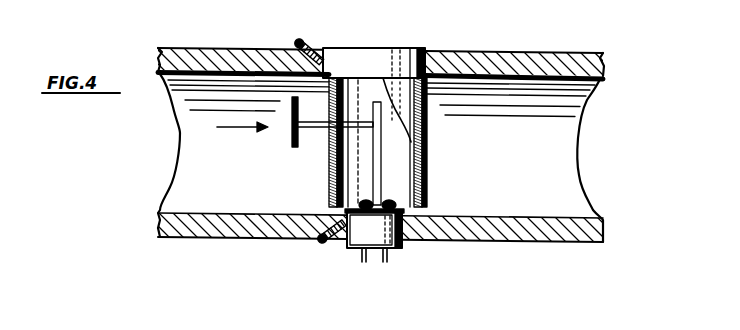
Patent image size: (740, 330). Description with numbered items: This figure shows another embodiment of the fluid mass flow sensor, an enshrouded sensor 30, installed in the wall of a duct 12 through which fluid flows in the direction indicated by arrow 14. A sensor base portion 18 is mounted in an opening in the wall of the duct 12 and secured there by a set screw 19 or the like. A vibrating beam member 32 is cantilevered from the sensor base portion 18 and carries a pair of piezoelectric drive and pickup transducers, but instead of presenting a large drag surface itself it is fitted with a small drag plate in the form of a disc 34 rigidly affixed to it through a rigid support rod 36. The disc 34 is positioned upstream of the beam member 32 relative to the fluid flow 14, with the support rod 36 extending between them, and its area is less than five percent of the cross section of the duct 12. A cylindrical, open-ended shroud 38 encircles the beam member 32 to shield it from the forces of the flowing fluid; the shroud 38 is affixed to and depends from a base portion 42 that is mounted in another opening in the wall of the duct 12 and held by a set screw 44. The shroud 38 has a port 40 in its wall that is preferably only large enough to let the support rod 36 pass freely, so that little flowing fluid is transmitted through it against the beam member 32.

The duct 12 is at (518, 54).
The fluid flow 14 is at (229, 127).
The sensor base portion 18 is at (358, 236).
The set screw 19 is at (322, 244).
The enshrouded sensor 30 is at (388, 146).
The vibrating beam member 32 is at (380, 163).
The disc 34 is at (291, 142).
The support rod 36 is at (325, 125).
The shroud 38 is at (423, 189).
The port 40 is at (328, 118).
The base portion 42 is at (376, 56).
The set screw 44 is at (303, 50).